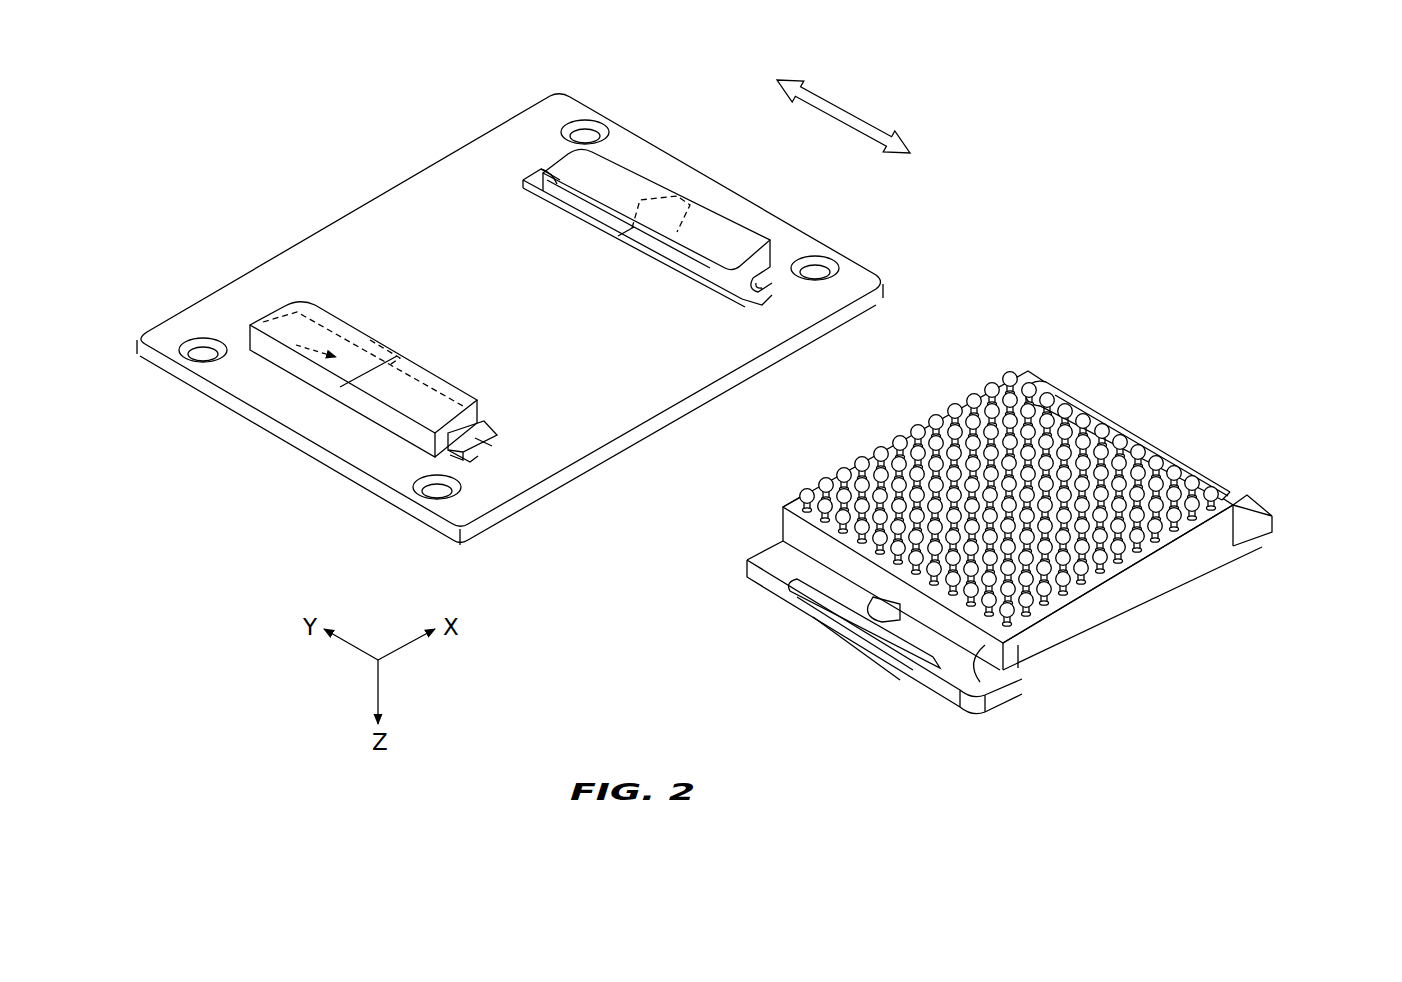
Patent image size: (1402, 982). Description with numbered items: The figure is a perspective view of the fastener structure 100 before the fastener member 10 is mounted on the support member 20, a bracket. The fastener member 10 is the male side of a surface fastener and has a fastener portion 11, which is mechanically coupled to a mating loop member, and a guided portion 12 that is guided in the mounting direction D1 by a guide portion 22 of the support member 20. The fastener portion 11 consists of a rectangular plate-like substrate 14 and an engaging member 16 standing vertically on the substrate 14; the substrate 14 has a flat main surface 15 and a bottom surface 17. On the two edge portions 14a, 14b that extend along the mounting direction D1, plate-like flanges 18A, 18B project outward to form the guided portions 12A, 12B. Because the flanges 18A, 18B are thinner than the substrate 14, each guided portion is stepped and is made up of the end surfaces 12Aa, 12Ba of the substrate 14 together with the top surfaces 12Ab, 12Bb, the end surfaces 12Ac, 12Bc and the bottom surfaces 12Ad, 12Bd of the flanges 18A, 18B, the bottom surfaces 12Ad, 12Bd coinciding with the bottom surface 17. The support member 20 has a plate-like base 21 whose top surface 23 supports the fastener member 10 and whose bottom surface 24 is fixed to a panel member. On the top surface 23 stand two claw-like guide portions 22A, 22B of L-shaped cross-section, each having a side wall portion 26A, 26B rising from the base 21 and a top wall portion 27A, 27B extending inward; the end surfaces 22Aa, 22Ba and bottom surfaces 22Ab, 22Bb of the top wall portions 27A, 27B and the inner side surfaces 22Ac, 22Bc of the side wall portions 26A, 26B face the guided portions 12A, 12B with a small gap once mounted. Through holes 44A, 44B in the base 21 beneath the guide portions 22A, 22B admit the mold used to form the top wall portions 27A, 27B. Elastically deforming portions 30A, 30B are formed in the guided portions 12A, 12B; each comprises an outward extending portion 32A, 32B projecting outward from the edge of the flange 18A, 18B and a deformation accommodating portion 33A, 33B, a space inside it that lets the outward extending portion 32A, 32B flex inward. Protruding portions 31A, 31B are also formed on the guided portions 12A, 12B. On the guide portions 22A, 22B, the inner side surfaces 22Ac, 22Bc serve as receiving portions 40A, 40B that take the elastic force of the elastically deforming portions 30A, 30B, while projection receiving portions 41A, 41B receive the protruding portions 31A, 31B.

The fastener structure 100 is at (760, 429).
The fastener member 10 is at (1012, 537).
The fastener portion 11 is at (1009, 465).
The guided portion 12 is at (1012, 608).
The guided portion 12A is at (1310, 541).
The end surface 12Aa is at (1268, 547).
The top surface 12Ab is at (1272, 516).
The end surface 12Ac is at (1265, 530).
The bottom surface 12Ad is at (1252, 562).
The guided portion 12B is at (881, 633).
The end surface 12Ba is at (986, 673).
The top surface 12Bb is at (1010, 678).
The end surface 12Bc is at (950, 691).
The bottom surface 12Bd is at (985, 700).
The substrate 14 is at (1022, 531).
The edge portion 14a is at (1159, 406).
The edge portion 14b is at (795, 500).
The main surface 15 is at (1170, 552).
The engaging member 16 is at (1003, 430).
The bottom surface 17 is at (1115, 628).
The flange 18A is at (1262, 500).
The flange 18B is at (746, 582).
The support member 20 is at (575, 333).
The base 21 is at (652, 386).
The guide portion 22 is at (575, 303).
The guide portion 22A is at (726, 209).
The end surface 22Aa is at (675, 252).
The bottom surface 22Ab is at (745, 273).
The inner side surface 22Ac is at (774, 290).
The guide portion 22B is at (390, 402).
The end surface 22Ba is at (446, 390).
The bottom surface 22Bb is at (489, 430).
The inner side surface 22Bc is at (462, 450).
The top surface 23 is at (548, 427).
The bottom surface 24 is at (495, 537).
The side wall portion 26A is at (775, 255).
The side wall portion 26B is at (350, 402).
The top wall portion 27A is at (693, 222).
The top wall portion 27B is at (300, 338).
The elastically deforming portion 30A is at (1173, 428).
The elastically deforming portion 30B is at (826, 663).
The protruding portion 31A is at (1147, 443).
The protruding portion 31B is at (878, 600).
The outward extending portion 32A is at (1170, 453).
The outward extending portion 32B is at (850, 638).
The deformation accommodating portion 33A is at (1222, 490).
The deformation accommodating portion 33B is at (875, 648).
The receiving portion 40A is at (879, 277).
The receiving portion 40B is at (548, 492).
The projection receiving portion 41A is at (623, 226).
The projection receiving portion 41B is at (363, 350).
The through hole 44A is at (556, 197).
The through hole 44B is at (496, 428).
The mounting direction D1 is at (845, 126).